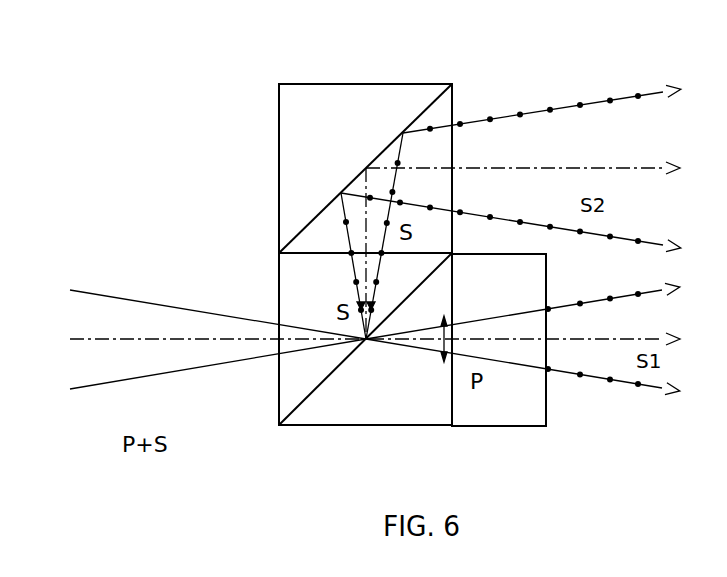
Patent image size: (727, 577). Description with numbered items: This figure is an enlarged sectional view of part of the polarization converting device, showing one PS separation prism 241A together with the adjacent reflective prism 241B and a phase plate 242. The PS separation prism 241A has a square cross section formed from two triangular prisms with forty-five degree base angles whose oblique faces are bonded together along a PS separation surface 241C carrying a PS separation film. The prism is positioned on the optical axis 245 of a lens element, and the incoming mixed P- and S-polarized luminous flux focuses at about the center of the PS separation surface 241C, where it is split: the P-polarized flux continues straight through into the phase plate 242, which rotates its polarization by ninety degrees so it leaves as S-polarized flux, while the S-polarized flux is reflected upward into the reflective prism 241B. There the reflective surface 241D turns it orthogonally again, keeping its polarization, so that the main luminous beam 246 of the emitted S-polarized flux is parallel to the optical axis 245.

The PS separation prism 241A is at (279, 264).
The reflective prism 241B is at (279, 152).
The PS separation surface 241C is at (320, 388).
The reflective surface 241D is at (415, 120).
The phase plate 242 is at (496, 426).
The optical axis 245 is at (97, 338).
The main luminous beam 246 is at (613, 168).